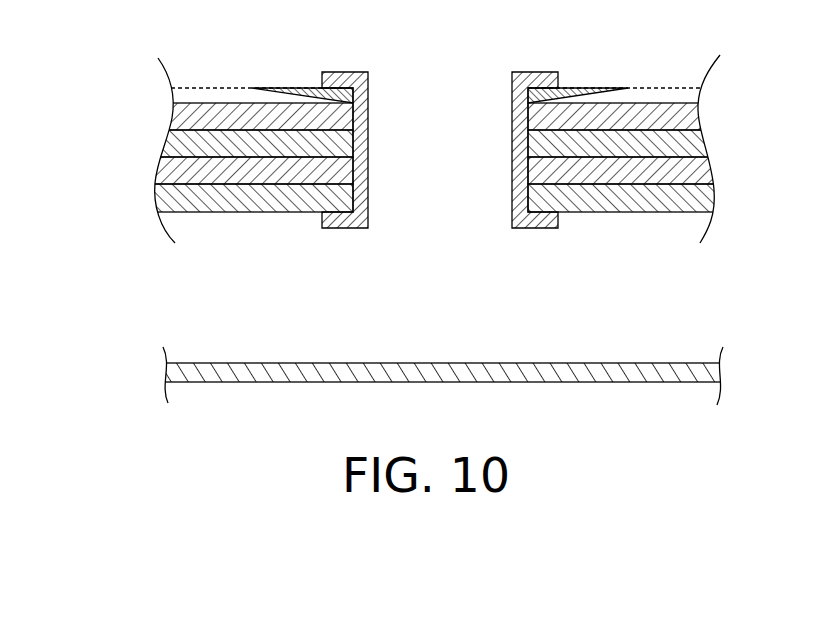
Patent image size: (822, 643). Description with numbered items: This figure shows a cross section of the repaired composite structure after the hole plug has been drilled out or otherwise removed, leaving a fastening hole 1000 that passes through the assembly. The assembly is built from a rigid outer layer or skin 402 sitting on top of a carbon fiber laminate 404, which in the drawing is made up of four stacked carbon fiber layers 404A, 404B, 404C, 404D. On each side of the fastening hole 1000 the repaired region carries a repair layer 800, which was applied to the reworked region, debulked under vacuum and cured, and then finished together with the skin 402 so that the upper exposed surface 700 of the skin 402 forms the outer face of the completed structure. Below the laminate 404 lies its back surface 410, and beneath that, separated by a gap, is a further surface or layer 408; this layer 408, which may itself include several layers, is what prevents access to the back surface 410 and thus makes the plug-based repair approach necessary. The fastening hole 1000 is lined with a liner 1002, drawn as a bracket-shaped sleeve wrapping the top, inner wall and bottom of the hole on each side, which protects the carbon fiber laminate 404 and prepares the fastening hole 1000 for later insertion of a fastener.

The fastening hole 1000 is at (476, 66).
The skin 402 is at (218, 92).
The repair layer 800 is at (312, 88).
The upper exposed surface 700 is at (657, 80).
The carbon fiber laminate 404 is at (372, 157).
The carbon fiber layer 404A is at (174, 117).
The carbon fiber layer 404B is at (168, 145).
The carbon fiber layer 404C is at (160, 172).
The carbon fiber layer 404D is at (408, 198).
The liner 1002 is at (347, 230).
The back surface 410 is at (613, 219).
The layer 408 is at (255, 382).